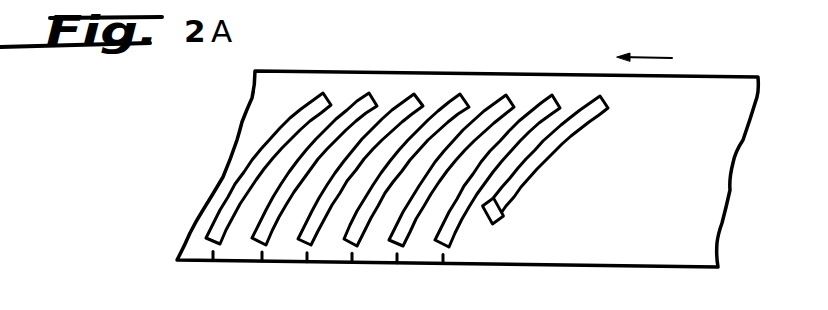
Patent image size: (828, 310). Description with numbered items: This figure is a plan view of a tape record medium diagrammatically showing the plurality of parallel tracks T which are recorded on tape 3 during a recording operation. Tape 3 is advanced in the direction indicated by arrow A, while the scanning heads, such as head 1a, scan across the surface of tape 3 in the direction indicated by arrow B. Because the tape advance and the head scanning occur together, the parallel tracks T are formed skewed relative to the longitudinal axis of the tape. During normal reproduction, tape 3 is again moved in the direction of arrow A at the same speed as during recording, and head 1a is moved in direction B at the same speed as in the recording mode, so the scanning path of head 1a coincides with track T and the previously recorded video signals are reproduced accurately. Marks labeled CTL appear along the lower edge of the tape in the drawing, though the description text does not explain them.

The tape 3 is at (295, 76).
The arrow indicating direction of tape advance A is at (658, 53).
The parallel tracks T is at (360, 240).
The head 1a is at (504, 215).
The arrow indicating scanning direction of heads B is at (503, 227).
The control track pulses CTL is at (308, 262).